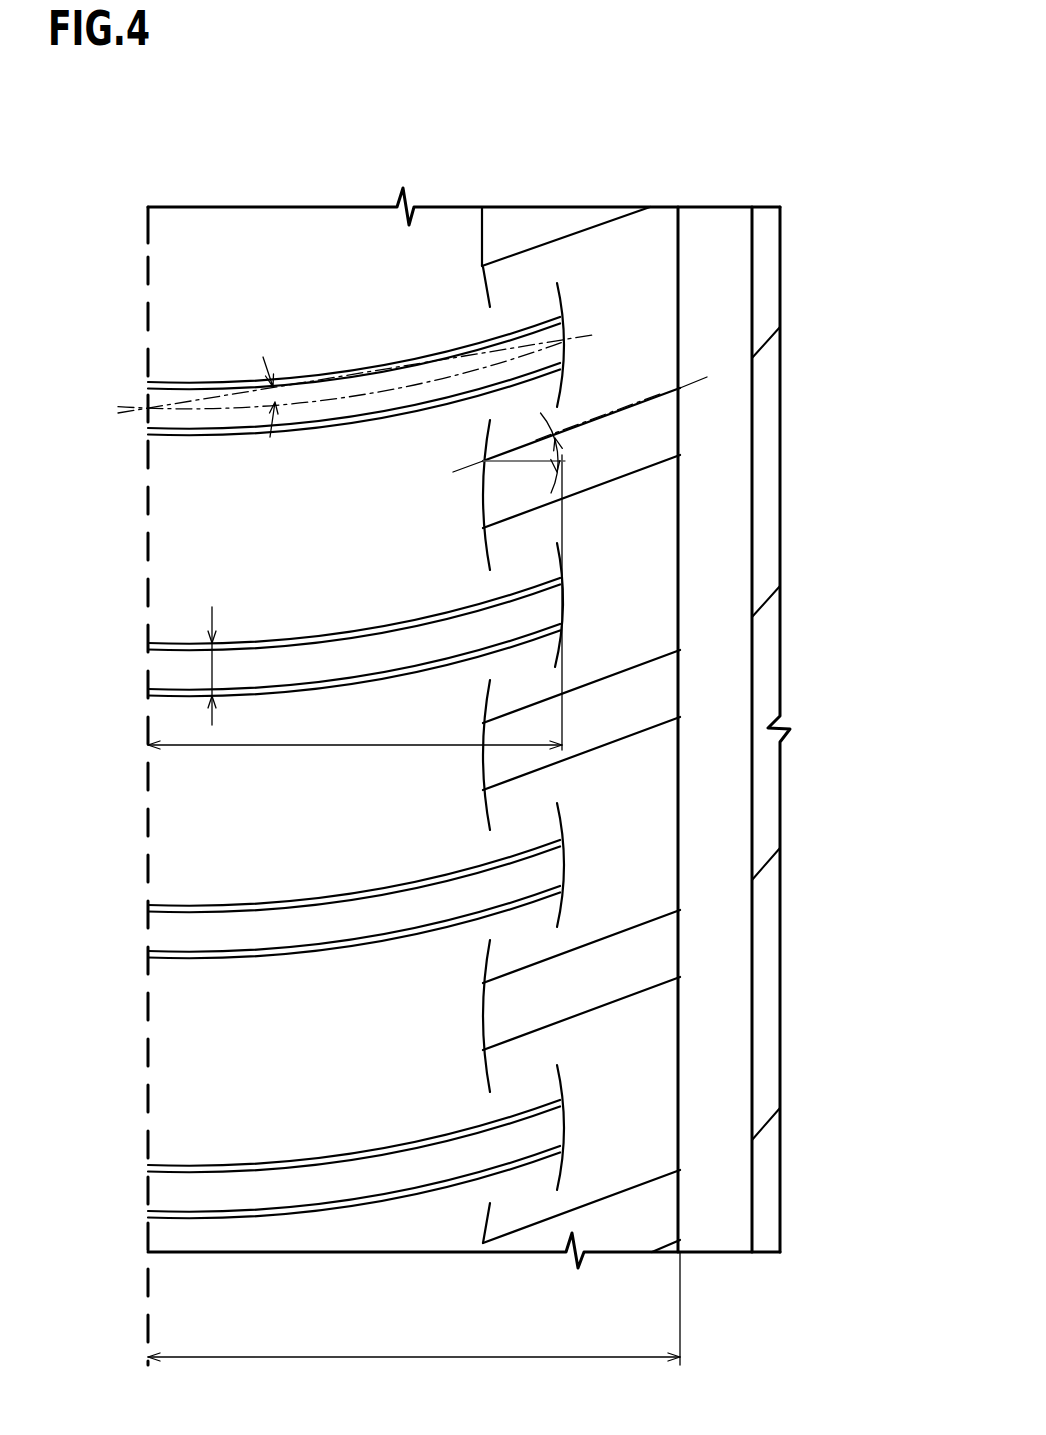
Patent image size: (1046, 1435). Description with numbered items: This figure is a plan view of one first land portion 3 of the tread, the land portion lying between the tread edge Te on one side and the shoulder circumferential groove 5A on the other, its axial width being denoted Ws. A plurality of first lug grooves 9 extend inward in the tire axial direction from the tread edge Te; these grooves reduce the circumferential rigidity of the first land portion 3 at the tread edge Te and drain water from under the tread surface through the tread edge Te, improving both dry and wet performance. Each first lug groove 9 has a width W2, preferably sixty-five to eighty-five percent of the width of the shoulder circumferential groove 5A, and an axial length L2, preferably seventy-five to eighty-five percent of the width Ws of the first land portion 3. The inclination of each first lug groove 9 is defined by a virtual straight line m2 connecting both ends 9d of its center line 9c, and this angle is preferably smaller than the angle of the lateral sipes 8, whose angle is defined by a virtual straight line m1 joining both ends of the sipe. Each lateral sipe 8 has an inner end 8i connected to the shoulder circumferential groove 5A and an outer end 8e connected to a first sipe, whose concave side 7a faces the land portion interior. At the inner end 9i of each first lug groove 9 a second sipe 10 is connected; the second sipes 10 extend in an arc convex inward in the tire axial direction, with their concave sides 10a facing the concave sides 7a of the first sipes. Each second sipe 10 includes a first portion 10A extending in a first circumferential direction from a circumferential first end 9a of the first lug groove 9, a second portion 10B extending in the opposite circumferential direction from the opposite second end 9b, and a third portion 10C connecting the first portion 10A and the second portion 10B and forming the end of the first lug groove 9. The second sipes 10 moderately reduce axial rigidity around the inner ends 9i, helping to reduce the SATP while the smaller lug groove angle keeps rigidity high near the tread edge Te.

The first land portion 3 is at (747, 143).
The tread edge Te is at (148, 228).
The shoulder circumferential groove 5A is at (715, 1223).
The concave side of first sipe 7a is at (492, 1013).
The lateral sipe 8 is at (661, 498).
The inner end of lateral sipe 8i is at (680, 388).
The outer end of lateral sipe 8e is at (483, 461).
The first lug groove 9 is at (457, 669).
The circumferential first end of first lug groove 9a is at (562, 1102).
The circumferential second end of first lug groove 9b is at (563, 1152).
The center line of first lug groove 9c is at (388, 388).
The end of center line of first lug groove 9d is at (148, 410).
The inner end of first lug groove 9i is at (563, 865).
The second sipe 10 is at (654, 995).
The first portion of second sipe 10A is at (563, 1083).
The second portion of second sipe 10B is at (563, 1175).
The third portion of second sipe 10C is at (563, 1128).
The concave side of second sipe 10a is at (553, 1127).
The virtual straight line of lateral sipe m1 is at (615, 413).
The virtual straight line of first lug groove m2 is at (472, 358).
The width of first lug groove W2 is at (212, 668).
The length of first lug groove L2 is at (350, 745).
The width of first land portion Ws is at (414, 1321).